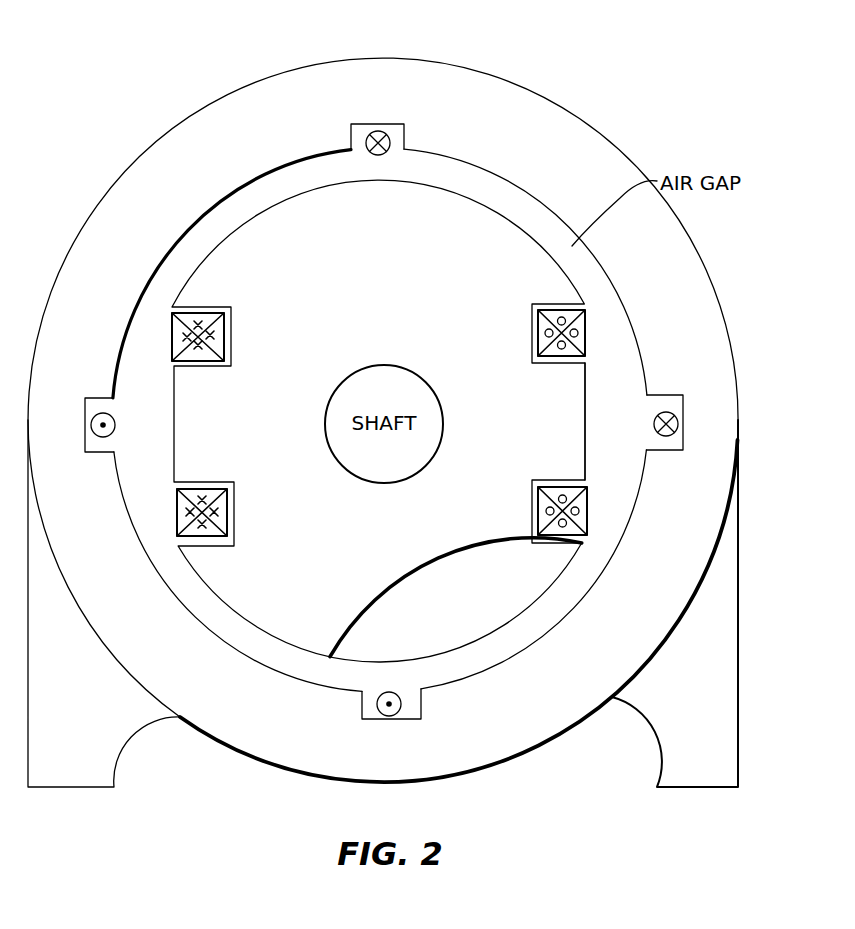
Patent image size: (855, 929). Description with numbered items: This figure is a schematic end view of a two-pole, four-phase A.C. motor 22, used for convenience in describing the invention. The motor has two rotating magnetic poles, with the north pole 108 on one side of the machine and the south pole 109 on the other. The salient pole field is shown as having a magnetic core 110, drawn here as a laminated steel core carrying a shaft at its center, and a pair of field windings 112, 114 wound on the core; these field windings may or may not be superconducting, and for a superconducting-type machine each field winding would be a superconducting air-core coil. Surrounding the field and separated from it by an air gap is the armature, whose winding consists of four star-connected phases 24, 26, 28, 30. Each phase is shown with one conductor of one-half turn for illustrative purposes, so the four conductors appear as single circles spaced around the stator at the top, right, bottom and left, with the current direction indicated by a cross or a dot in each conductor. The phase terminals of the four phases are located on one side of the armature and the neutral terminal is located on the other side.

The motor housing 22 is at (371, 24).
The armature winding phase 24 is at (393, 101).
The armature winding phase 26 is at (674, 428).
The armature winding phase 28 is at (386, 719).
The armature winding phase 30 is at (93, 427).
The north pole 108 is at (437, 205).
The south pole 109 is at (490, 622).
The magnetic core 110 is at (586, 418).
The field winding 112 is at (586, 331).
The field winding 114 is at (588, 523).